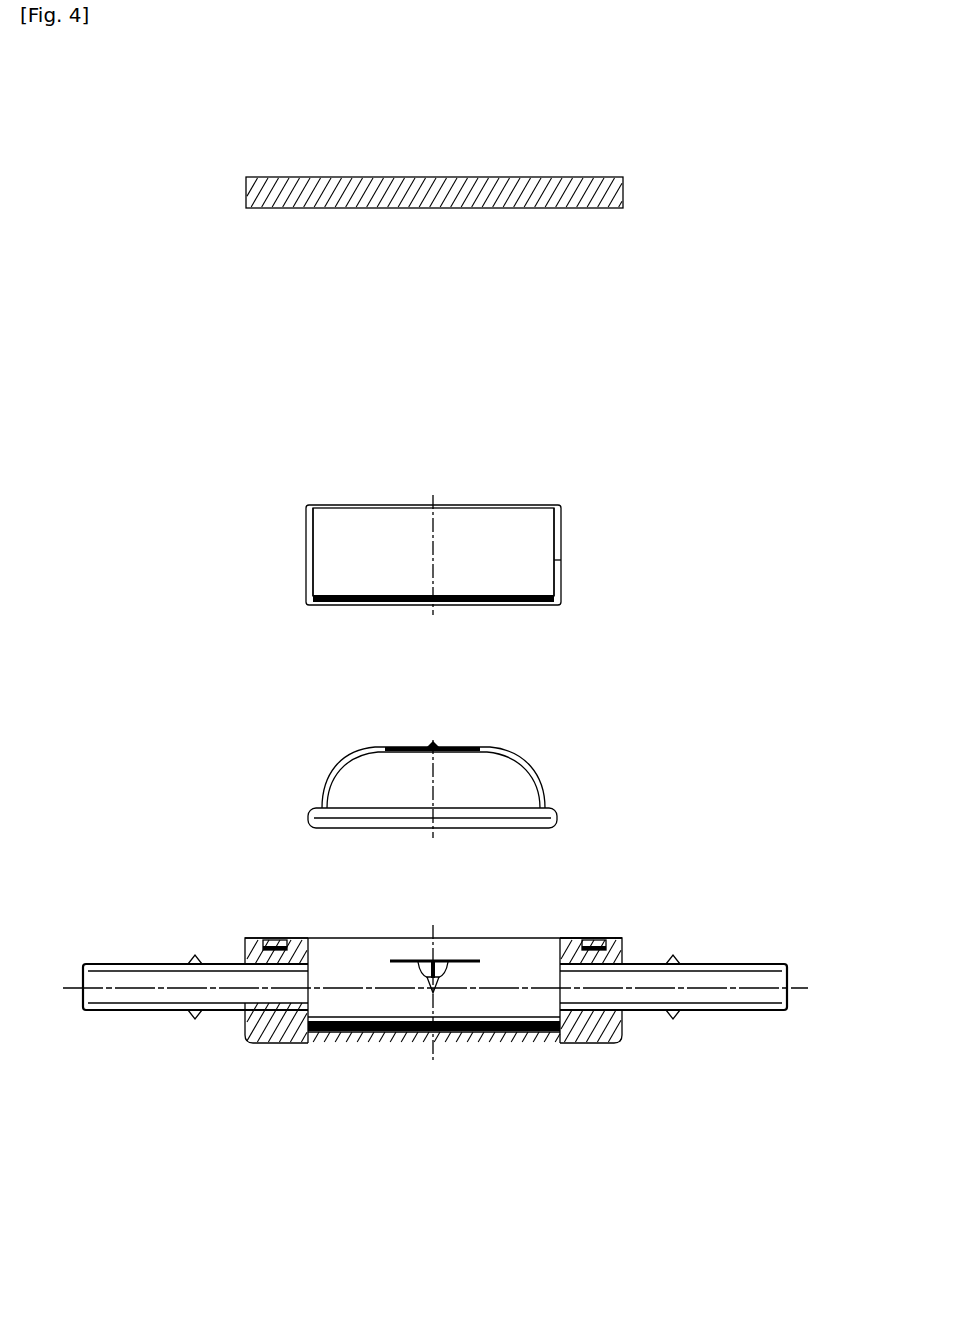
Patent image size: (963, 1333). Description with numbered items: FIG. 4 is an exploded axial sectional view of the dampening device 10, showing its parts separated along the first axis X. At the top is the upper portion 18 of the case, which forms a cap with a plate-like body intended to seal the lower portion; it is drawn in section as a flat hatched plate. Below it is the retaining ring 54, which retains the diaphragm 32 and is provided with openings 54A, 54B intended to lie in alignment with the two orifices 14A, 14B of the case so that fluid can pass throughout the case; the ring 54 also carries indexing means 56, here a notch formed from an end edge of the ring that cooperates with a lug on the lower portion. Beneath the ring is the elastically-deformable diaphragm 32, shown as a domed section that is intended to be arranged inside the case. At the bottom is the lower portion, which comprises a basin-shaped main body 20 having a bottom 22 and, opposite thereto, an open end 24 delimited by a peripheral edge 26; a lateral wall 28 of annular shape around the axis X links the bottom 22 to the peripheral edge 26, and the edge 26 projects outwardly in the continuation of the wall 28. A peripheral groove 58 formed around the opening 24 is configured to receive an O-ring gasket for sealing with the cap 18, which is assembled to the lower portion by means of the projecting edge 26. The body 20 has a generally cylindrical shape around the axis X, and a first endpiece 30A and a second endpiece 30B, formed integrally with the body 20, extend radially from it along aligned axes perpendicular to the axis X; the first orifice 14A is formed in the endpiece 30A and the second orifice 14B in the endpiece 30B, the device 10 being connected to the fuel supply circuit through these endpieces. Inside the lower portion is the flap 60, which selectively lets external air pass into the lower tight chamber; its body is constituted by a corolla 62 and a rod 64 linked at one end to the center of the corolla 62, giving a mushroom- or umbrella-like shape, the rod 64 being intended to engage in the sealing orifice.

The device 10 is at (692, 290).
The upper portion 18 is at (565, 177).
The retaining ring 54 is at (303, 531).
The opening 54A is at (305, 570).
The opening 54B is at (561, 568).
The indexing means 56 is at (561, 518).
The first axis X is at (435, 505).
The diaphragm 32 is at (520, 763).
The main body 20 is at (653, 965).
The first orifice 14A is at (277, 1003).
The second orifice 14B is at (610, 1040).
The open end 24 is at (330, 957).
The peripheral edge 26 is at (560, 945).
The peripheral groove 58 is at (595, 945).
The first endpiece 30A is at (105, 1000).
The second endpiece 30B is at (725, 988).
The bottom 22 is at (345, 1043).
The lateral wall 28 is at (505, 1043).
The flap 60 is at (412, 952).
The corolla 62 is at (455, 952).
The rod 64 is at (437, 1037).